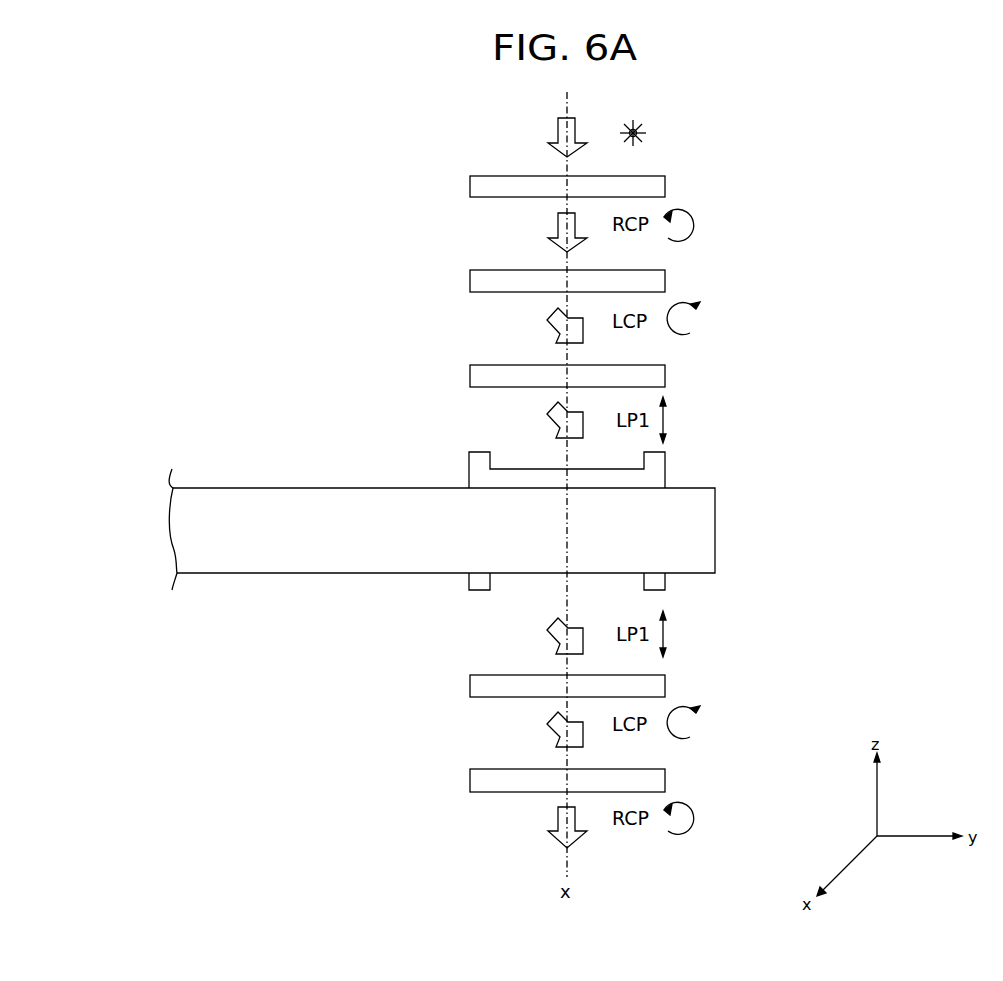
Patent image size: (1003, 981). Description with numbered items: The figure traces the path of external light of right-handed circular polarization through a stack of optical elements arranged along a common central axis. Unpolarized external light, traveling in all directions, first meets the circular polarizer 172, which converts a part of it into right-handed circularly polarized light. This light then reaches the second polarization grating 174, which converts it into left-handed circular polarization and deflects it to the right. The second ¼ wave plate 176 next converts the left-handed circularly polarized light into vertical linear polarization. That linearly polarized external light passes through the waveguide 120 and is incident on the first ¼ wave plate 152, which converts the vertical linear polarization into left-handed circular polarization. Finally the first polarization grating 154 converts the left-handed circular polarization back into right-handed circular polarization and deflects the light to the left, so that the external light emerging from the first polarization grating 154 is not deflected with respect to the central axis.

The circular polarizer 172 is at (665, 186).
The second polarization grating 174 is at (665, 281).
The second ¼ wave plate 176 is at (665, 376).
The waveguide 120 is at (715, 530).
The first ¼ wave plate 152 is at (665, 686).
The first polarization grating 154 is at (665, 780).